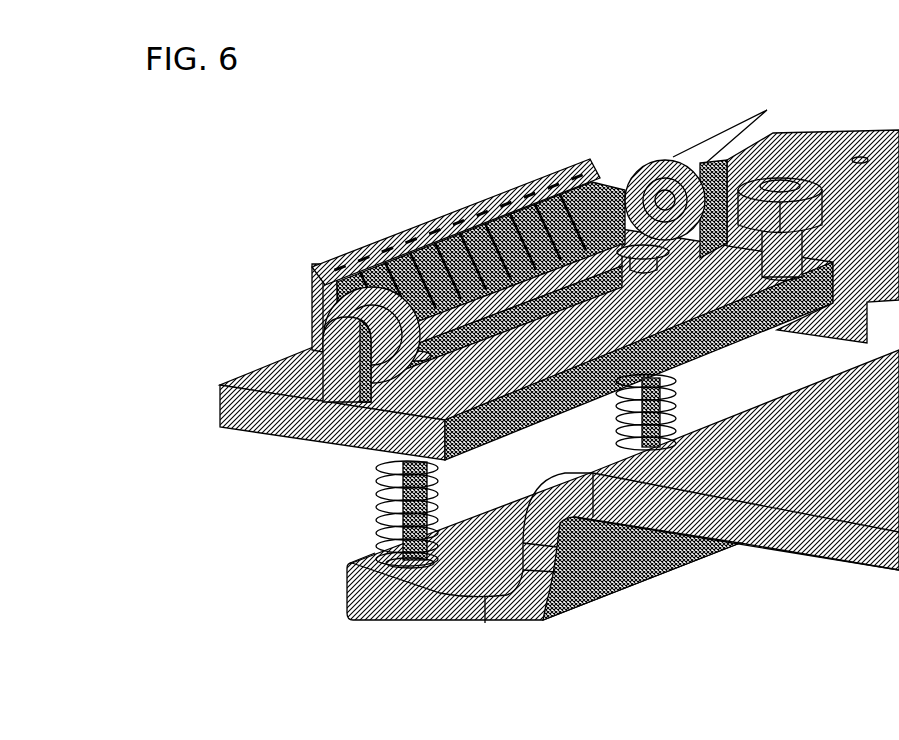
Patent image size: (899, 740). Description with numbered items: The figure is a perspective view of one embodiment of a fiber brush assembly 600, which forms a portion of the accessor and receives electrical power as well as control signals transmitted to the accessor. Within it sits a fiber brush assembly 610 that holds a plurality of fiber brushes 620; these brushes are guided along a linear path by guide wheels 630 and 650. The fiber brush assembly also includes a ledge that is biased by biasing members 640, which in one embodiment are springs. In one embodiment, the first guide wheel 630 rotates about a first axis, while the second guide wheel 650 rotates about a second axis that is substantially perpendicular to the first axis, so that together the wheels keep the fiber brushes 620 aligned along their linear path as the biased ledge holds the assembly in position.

The fiber brush assembly 600 is at (205, 123).
The fiber brush assembly 610 is at (426, 117).
The fiber brushes 620 is at (363, 253).
The guide wheel 630 is at (666, 126).
The biasing members 640 is at (602, 426).
The guide wheel 650 is at (751, 178).